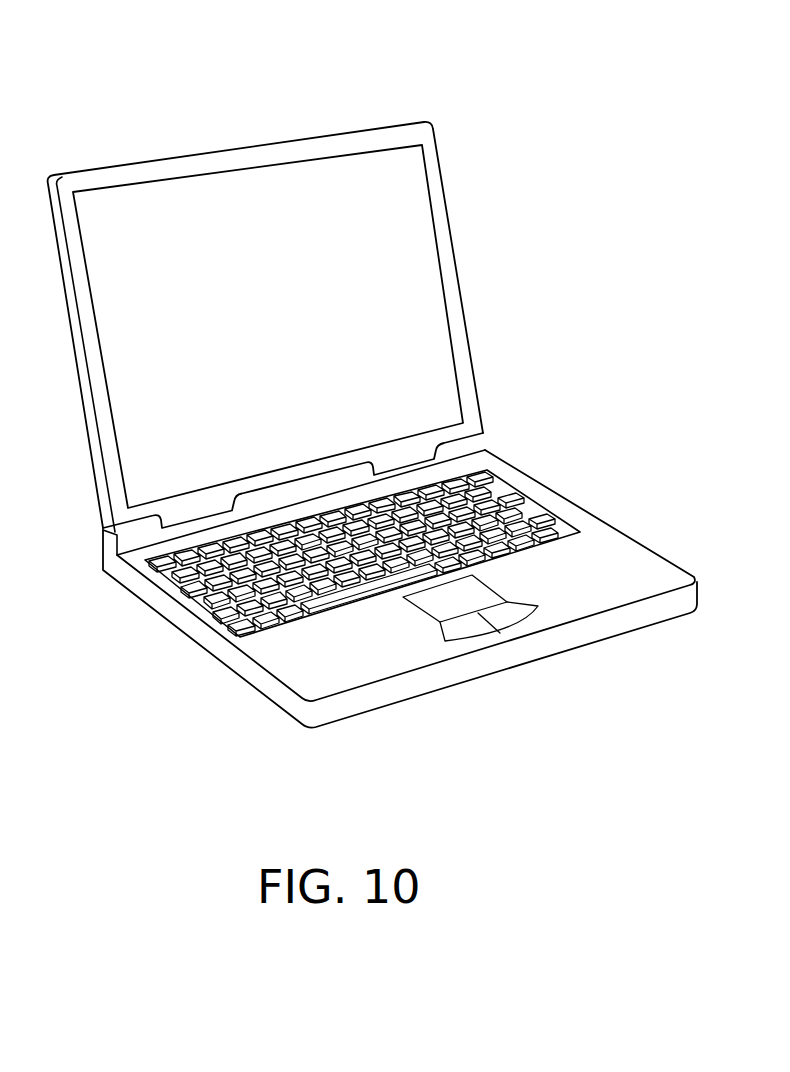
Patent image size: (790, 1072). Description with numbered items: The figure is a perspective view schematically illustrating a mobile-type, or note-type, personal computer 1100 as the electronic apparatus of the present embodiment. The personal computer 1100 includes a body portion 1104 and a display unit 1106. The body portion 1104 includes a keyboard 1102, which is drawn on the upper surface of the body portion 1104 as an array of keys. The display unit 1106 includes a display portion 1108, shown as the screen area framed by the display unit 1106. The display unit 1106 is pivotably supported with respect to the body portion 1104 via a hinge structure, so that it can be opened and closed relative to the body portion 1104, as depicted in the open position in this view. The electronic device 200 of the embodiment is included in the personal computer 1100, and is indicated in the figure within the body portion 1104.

The personal computer 1100 is at (467, 113).
The keyboard 1102 is at (527, 497).
The body portion 1104 is at (385, 665).
The display unit 1106 is at (458, 255).
The display portion 1108 is at (258, 192).
The electronic device 200 is at (612, 573).